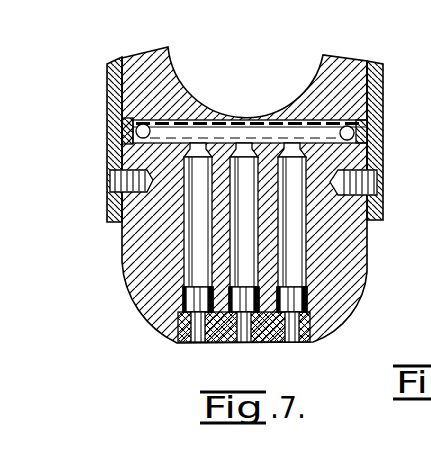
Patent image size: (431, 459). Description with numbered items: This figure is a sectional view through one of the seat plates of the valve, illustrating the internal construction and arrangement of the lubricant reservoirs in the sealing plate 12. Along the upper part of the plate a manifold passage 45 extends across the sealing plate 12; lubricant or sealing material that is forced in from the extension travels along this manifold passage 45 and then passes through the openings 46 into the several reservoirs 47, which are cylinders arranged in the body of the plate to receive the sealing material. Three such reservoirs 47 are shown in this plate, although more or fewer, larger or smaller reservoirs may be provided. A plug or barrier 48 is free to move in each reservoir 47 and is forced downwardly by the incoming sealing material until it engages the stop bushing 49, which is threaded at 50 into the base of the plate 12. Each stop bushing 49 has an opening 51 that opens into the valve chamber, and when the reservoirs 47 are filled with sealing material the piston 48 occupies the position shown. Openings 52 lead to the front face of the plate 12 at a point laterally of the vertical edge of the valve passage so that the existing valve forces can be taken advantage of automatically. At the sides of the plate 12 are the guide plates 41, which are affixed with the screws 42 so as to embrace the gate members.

The sealing plate 12 is at (377, 276).
The guide plate 41 is at (372, 221).
The screw 42 is at (382, 184).
The manifold passage 45 is at (190, 130).
The opening 46 is at (222, 129).
The reservoir 47 is at (195, 218).
The plug or barrier 48 is at (200, 302).
The stop bushing 49 is at (190, 318).
The threads 50 is at (199, 338).
The opening 51 is at (198, 339).
The opening 52 is at (354, 133).